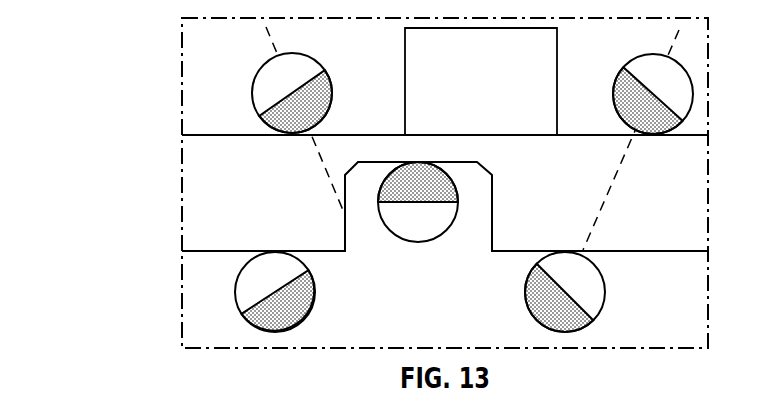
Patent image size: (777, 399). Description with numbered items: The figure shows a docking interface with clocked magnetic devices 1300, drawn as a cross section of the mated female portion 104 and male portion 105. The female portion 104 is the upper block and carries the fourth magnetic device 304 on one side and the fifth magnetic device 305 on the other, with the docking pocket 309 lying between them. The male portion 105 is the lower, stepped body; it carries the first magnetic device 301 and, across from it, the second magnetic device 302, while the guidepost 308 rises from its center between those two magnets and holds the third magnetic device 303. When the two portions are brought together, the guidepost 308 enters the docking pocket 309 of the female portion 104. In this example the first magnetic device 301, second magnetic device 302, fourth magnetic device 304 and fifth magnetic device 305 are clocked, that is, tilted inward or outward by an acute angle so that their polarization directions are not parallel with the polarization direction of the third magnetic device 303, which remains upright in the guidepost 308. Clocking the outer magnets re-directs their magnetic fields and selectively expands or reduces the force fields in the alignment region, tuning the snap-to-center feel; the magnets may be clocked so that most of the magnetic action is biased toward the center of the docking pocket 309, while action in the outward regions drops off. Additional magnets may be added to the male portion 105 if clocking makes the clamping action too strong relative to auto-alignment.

The docking interface with clocked magnetic devices 1300 is at (155, 30).
The female portion 104 is at (387, 58).
The male portion 105 is at (220, 248).
The first magnetic device 301 is at (315, 291).
The second magnetic device 302 is at (606, 292).
The third magnetic device 303 is at (415, 243).
The fourth magnetic device 304 is at (262, 65).
The fifth magnetic device 305 is at (645, 53).
The guidepost 308 is at (441, 155).
The docking pocket 309 is at (506, 140).